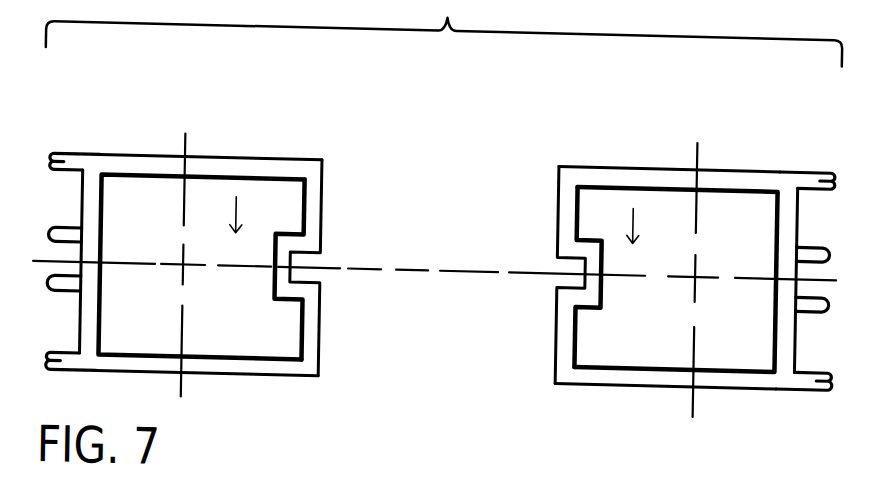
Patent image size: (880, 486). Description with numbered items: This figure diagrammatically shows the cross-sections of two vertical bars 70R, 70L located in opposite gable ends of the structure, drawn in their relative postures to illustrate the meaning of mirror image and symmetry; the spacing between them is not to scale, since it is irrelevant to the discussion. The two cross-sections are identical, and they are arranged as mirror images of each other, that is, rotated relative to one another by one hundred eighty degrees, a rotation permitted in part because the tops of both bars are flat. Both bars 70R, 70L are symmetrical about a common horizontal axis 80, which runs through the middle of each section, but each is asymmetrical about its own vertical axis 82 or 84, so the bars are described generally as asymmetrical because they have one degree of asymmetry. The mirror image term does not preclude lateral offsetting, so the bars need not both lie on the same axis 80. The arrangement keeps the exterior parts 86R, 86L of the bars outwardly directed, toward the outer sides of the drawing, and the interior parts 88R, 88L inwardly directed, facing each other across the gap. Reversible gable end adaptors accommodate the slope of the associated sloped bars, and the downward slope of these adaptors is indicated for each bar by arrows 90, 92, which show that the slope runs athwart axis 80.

The vertical bar 70R is at (204, 252).
The vertical bar 70L is at (677, 268).
The axis 80 is at (429, 260).
The axis 82 is at (184, 146).
The axis 84 is at (696, 145).
The exterior part 86R is at (83, 199).
The exterior part 86L is at (798, 203).
The interior part 88R is at (322, 200).
The interior part 88L is at (559, 199).
The arrow 90 is at (237, 211).
The arrow 92 is at (634, 214).